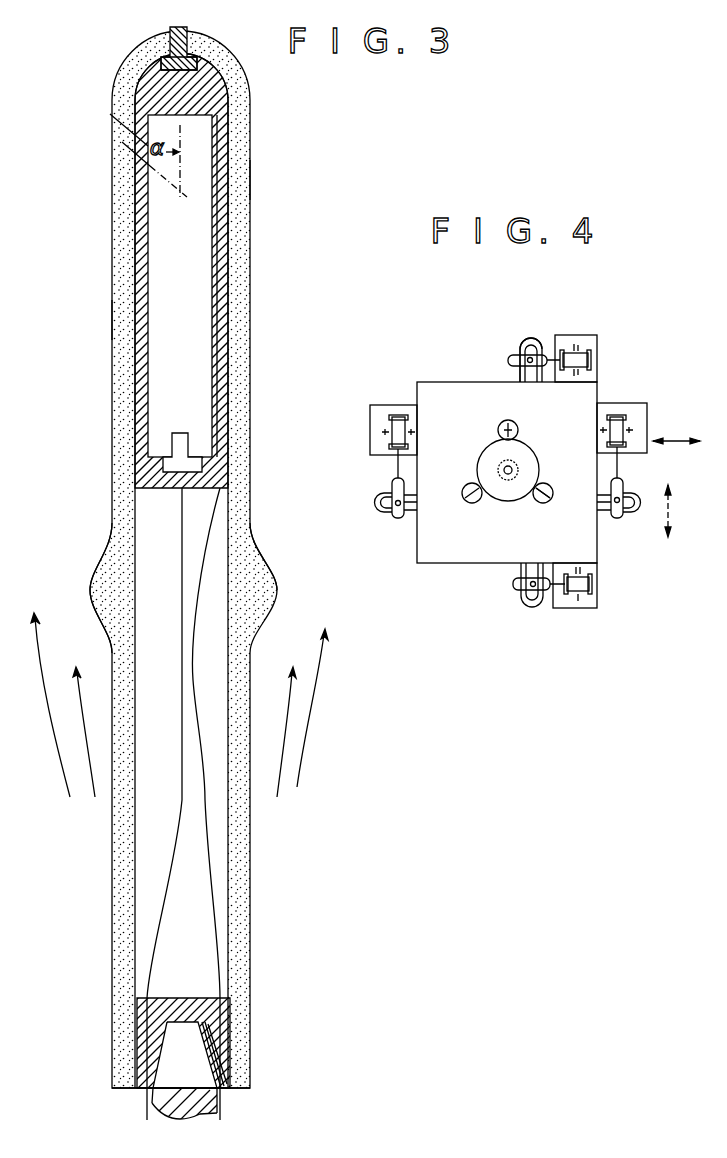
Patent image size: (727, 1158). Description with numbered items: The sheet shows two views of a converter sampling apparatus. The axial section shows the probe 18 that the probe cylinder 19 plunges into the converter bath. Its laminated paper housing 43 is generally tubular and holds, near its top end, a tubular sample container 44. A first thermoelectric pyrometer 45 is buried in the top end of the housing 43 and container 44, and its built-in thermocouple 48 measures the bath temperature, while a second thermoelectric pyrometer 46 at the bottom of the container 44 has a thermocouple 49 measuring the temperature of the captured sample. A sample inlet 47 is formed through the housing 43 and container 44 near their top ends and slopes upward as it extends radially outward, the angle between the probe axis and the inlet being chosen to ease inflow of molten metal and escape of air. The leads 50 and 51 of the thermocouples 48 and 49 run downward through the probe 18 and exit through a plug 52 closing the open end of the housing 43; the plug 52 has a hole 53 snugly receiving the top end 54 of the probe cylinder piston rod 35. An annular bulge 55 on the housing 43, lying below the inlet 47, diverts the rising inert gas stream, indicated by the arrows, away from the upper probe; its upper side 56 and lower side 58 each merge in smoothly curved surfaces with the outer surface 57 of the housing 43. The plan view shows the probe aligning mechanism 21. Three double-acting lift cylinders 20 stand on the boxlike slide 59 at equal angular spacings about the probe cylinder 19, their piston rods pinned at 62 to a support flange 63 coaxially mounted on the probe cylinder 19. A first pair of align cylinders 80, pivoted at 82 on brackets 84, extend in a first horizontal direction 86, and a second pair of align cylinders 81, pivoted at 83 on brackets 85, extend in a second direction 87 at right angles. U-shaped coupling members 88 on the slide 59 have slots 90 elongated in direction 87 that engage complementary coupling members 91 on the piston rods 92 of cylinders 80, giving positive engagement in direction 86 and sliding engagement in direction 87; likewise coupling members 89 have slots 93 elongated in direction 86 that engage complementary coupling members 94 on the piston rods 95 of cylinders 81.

In FIG. 3, the probe 18 is at (254, 213).
In FIG. 4, the probe cylinder 19 is at (504, 465).
In FIG. 4, the lift cylinders 20 is at (510, 424).
In FIG. 4, the probe aligning mechanism 21 is at (475, 338).
In FIG. 3, the probe cylinder piston rod 35 is at (160, 1095).
In FIG. 3, the laminated paper housing 43 is at (253, 285).
In FIG. 3, the sample container 44 is at (143, 253).
In FIG. 3, the first thermoelectric pyrometer 45 is at (165, 41).
In FIG. 3, the second thermoelectric pyrometer 46 is at (190, 455).
In FIG. 3, the sample inlet 47 is at (120, 133).
In FIG. 3, the thermocouple 48 is at (183, 70).
In FIG. 3, the thermocouple 49 is at (181, 490).
In FIG. 3, the leads 50 is at (198, 858).
In FIG. 3, the leads 51 is at (168, 885).
In FIG. 3, the plug 52 is at (222, 1018).
In FIG. 3, the hole 53 is at (165, 1050).
In FIG. 3, the top end of piston rod 54 is at (203, 1073).
In FIG. 3, the annular bulge 55 is at (270, 570).
In FIG. 3, the upper side of bulge 56 is at (97, 571).
In FIG. 3, the outer surface of housing 57 is at (112, 318).
In FIG. 3, the lower side of bulge 58 is at (100, 632).
In FIG. 4, the slide 59 is at (439, 570).
In FIG. 4, the pivot pins 62 is at (540, 498).
In FIG. 4, the support flange 63 is at (527, 457).
In FIG. 4, the first pair of align cylinders 80 is at (398, 415).
In FIG. 4, the second pair of align cylinders 81 is at (571, 350).
In FIG. 4, the pivot support 82 is at (382, 432).
In FIG. 4, the pivot support 83 is at (585, 352).
In FIG. 4, the brackets 84 is at (370, 410).
In FIG. 4, the brackets 85 is at (590, 345).
In FIG. 4, the first horizontal direction 86 is at (669, 515).
In FIG. 4, the second horizontal direction 87 is at (676, 441).
In FIG. 4, the first pair of coupling members 88 is at (406, 508).
In FIG. 4, the second pair of coupling members 89 is at (525, 340).
In FIG. 4, the slots 90 is at (386, 505).
In FIG. 4, the complementary coupling members 91 is at (398, 519).
In FIG. 4, the piston rods 92 is at (396, 462).
In FIG. 4, the slots 93 is at (508, 361).
In FIG. 4, the complementary coupling members 94 is at (519, 345).
In FIG. 4, the piston rods 95 is at (553, 350).